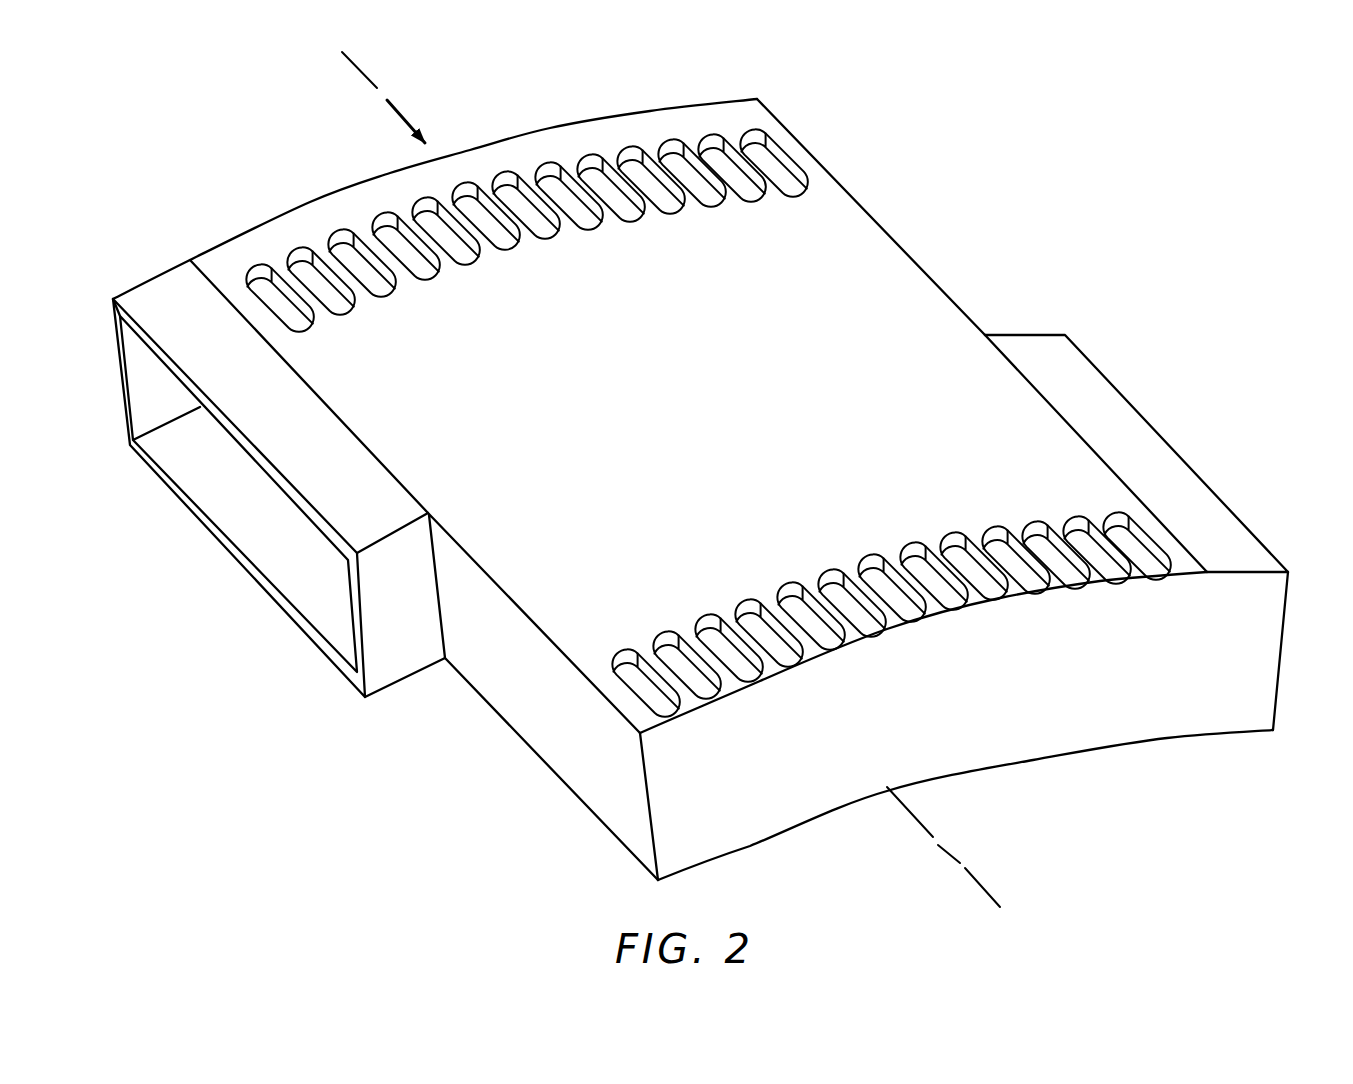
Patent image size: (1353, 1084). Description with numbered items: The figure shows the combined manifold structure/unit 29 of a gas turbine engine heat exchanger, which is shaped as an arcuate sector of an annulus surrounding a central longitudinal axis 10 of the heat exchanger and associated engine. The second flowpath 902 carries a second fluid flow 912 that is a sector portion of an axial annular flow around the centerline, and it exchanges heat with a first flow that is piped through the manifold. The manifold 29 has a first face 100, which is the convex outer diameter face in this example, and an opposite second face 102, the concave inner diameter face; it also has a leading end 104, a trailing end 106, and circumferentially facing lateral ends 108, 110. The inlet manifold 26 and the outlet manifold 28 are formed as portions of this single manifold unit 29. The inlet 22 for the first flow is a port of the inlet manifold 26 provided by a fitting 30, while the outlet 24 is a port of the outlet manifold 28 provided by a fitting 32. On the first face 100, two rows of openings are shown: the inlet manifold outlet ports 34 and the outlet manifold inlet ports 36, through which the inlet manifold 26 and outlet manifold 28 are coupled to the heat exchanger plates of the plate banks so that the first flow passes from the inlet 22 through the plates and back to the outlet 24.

The central longitudinal axis 10 is at (985, 885).
The inlet 22 is at (1172, 430).
The outlet 24 is at (303, 568).
The inlet manifold 26 is at (903, 533).
The outlet manifold 28 is at (702, 232).
The combined manifold structure/unit 29 is at (877, 173).
The fitting 30 is at (1102, 412).
The fitting 32 is at (172, 307).
The inlet manifold outlet ports 34 is at (715, 640).
The outlet manifold inlet ports 36 is at (590, 162).
The first face 100 is at (547, 427).
The second face 102 is at (973, 763).
The leading end 104 is at (310, 203).
The trailing end 106 is at (1122, 708).
The lateral end 108 is at (925, 272).
The lateral end 110 is at (558, 735).
The second flowpath 902 is at (363, 68).
The second fluid flow 912 is at (400, 105).